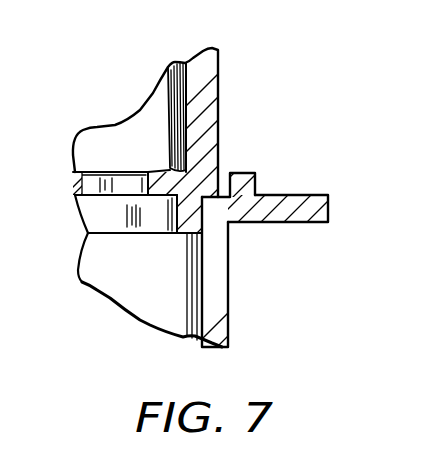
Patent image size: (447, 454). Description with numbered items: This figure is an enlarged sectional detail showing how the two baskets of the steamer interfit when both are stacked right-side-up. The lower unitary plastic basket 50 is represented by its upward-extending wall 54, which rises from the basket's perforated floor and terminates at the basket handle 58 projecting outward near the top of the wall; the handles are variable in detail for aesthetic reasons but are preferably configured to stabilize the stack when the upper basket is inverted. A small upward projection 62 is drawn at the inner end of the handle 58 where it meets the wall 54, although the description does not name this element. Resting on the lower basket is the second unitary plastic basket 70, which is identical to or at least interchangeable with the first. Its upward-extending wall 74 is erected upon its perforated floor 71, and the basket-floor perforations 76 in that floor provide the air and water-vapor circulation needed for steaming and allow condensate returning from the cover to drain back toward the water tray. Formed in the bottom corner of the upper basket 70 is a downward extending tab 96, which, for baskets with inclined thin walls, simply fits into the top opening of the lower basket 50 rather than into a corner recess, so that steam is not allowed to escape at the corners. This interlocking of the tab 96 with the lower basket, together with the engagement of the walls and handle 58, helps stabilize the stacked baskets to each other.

The unitary plastic basket 50 is at (264, 292).
The upward-extending wall 54 is at (229, 318).
The basket handle 58 is at (329, 205).
The locating rib 62 is at (247, 172).
The second unitary plastic basket 70 is at (228, 77).
The perforated floor 71 is at (170, 168).
The upward-extending wall 74 is at (219, 110).
The basket-floor perforations 76 is at (97, 178).
The downward extending tab 96 is at (167, 218).